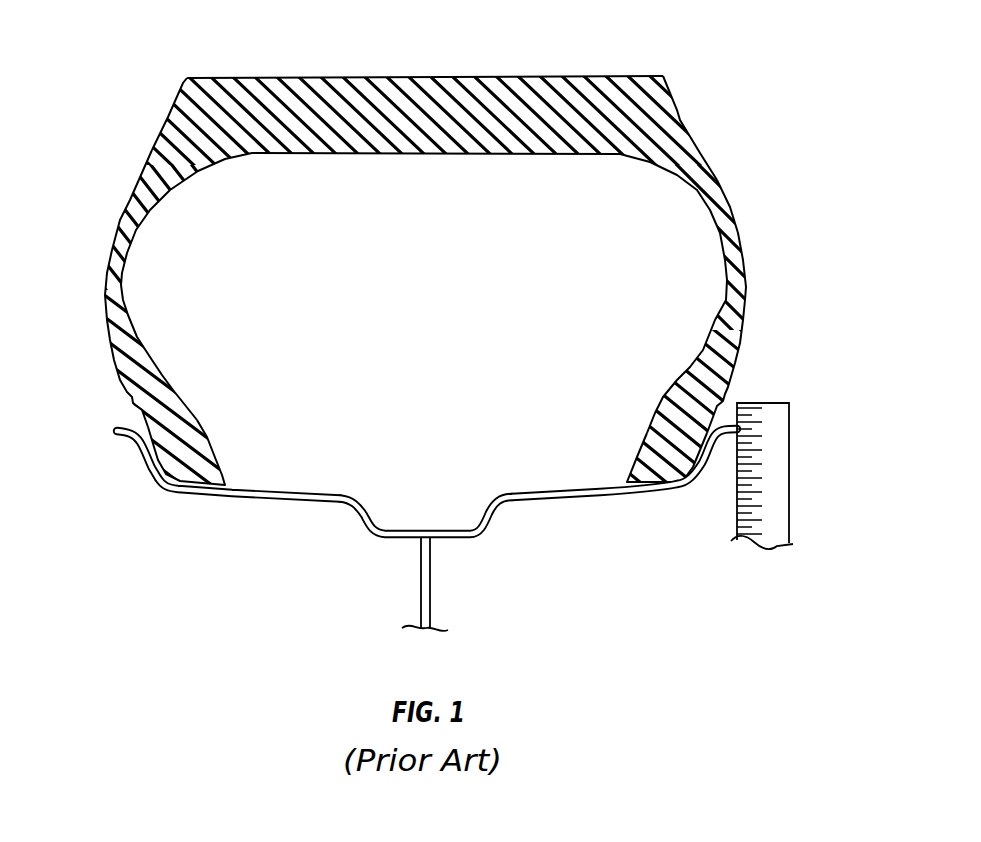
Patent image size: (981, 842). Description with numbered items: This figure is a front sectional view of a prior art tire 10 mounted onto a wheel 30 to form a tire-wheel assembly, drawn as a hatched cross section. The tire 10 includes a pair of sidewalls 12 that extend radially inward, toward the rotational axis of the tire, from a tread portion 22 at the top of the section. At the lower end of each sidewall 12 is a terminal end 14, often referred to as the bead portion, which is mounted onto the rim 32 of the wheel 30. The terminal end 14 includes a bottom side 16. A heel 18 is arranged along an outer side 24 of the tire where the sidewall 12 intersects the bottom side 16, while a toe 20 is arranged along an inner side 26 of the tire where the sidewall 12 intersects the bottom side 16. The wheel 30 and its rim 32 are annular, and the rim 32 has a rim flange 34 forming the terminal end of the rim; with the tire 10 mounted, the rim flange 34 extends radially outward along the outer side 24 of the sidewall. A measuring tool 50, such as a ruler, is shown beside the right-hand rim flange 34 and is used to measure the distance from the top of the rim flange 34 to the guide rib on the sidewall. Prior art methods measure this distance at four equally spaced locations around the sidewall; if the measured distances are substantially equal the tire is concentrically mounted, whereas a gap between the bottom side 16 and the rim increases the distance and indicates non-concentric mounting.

The tire 10 is at (146, 35).
The sidewall 12 is at (436, 291).
The terminal end 14 is at (427, 452).
The bottom side 16 is at (395, 509).
The heel 18 is at (707, 477).
The toe 20 is at (594, 474).
The tread portion 22 is at (425, 55).
The outer side 24 is at (467, 129).
The inner side 26 is at (43, 470).
The wheel 30 is at (519, 584).
The rim 32 is at (383, 531).
The rim flange 34 is at (135, 465).
The measuring tool 50 is at (787, 476).